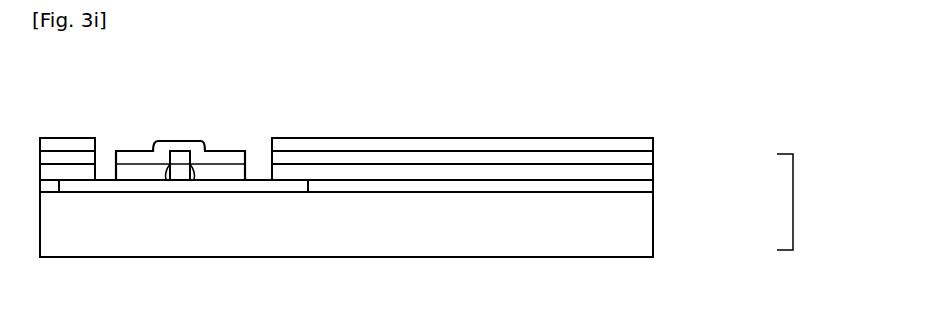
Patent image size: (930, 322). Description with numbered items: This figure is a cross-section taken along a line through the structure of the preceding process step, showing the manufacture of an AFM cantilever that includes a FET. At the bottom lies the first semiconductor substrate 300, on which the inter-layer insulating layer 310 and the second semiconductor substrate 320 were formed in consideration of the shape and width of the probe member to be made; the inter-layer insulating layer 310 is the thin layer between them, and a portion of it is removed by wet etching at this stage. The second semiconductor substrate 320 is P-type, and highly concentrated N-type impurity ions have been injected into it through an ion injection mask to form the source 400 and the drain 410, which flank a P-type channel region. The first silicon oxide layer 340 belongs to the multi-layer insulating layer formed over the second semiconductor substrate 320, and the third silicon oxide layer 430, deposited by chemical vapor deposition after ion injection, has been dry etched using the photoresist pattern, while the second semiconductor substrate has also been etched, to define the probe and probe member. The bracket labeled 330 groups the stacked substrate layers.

The first semiconductor substrate 300 is at (606, 226).
The inter-layer insulating layer 310 is at (628, 186).
The second semiconductor substrate 320 is at (637, 168).
The substrate structure 330 is at (823, 202).
The first silicon oxide layer 340 is at (183, 160).
The source 400 is at (139, 178).
The drain 410 is at (237, 177).
The third silicon oxide layer 430 is at (213, 160).